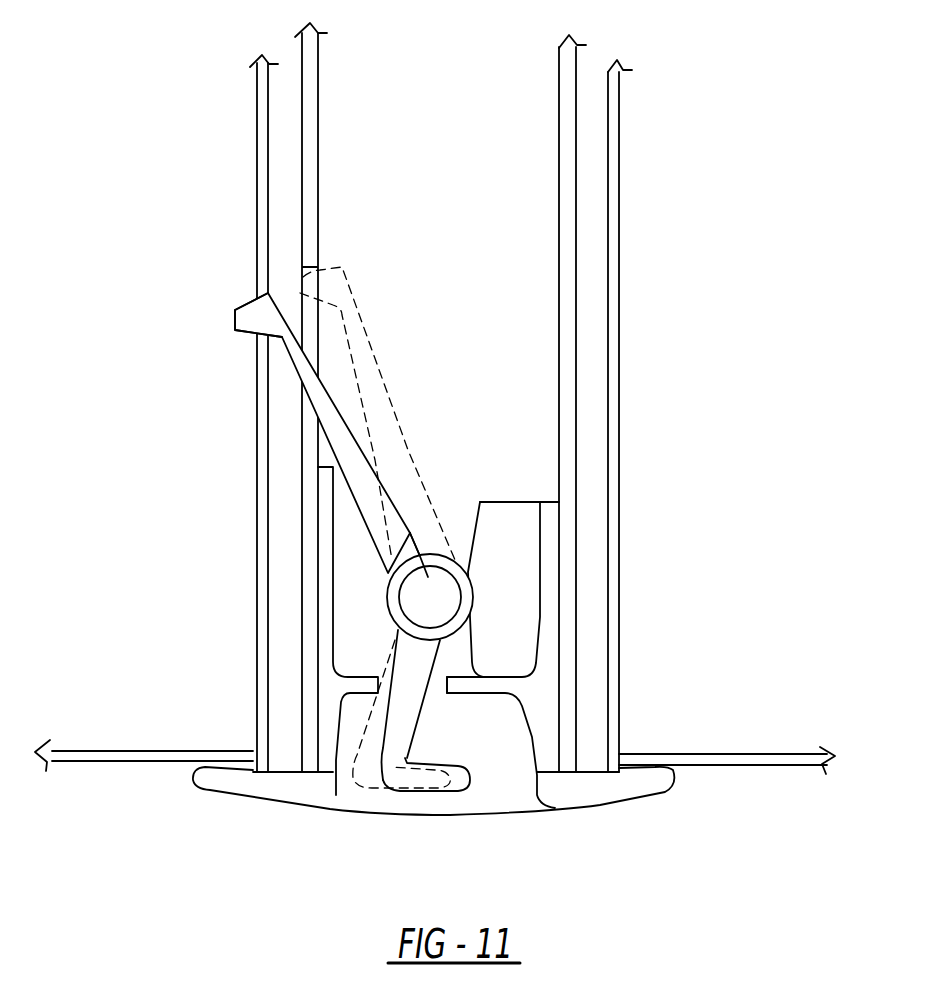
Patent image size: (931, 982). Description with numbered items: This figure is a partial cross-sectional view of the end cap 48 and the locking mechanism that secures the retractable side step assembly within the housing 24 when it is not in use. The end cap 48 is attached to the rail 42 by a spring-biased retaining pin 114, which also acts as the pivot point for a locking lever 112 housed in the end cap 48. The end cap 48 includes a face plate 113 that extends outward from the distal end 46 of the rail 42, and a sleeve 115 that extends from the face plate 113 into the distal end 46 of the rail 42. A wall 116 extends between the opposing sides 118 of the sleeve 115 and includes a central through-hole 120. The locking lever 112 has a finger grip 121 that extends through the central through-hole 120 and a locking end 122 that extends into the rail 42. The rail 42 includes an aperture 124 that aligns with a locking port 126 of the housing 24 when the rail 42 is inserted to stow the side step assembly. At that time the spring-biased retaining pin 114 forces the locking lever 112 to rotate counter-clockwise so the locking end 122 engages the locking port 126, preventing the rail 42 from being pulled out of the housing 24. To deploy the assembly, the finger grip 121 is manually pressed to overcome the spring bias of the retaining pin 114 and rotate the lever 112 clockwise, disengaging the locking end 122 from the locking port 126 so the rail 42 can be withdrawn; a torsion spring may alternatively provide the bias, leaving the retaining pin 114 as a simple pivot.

The housing 24 is at (620, 360).
The rail 42 is at (577, 252).
The distal end 46 is at (575, 640).
The end cap 48 is at (625, 797).
The locking lever 112 is at (341, 443).
The face plate 113 is at (517, 813).
The spring-biased retaining pin 114 is at (428, 576).
The sleeve 115 is at (538, 565).
The wall 116 is at (478, 676).
The opposing sides 118 is at (337, 589).
The central through-hole 120 is at (440, 690).
The finger grip 121 is at (453, 780).
The locking end 122 is at (235, 318).
The aperture 124 is at (316, 416).
The locking port 126 is at (262, 288).